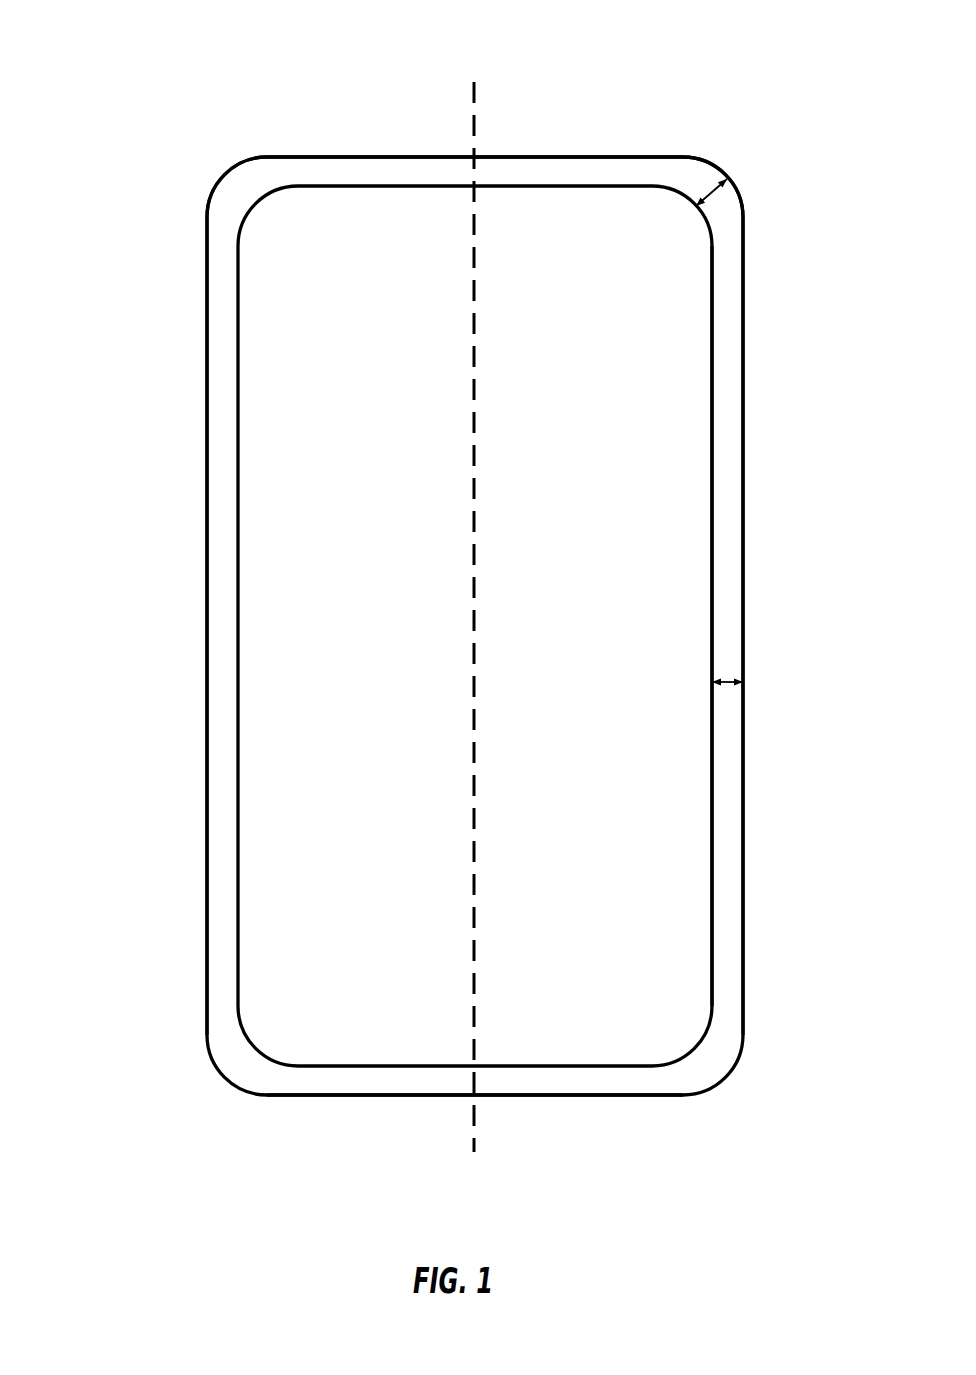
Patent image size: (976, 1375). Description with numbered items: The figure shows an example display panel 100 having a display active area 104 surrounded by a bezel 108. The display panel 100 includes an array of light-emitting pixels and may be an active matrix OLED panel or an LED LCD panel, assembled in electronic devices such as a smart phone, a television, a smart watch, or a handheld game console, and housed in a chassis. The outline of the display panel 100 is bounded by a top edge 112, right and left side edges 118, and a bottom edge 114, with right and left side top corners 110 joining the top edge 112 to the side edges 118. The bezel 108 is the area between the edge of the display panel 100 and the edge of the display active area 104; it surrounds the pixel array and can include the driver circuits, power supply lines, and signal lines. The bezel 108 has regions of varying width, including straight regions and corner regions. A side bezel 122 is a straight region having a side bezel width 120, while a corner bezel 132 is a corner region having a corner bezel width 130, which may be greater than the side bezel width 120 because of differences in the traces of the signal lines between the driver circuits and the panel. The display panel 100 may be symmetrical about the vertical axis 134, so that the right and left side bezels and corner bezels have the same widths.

The display panel 100 is at (86, 47).
The display active area 104 is at (275, 570).
The bezel 108 is at (218, 345).
The side top corner 110 is at (223, 175).
The top edge 112 is at (311, 157).
The bottom edge 114 is at (575, 1095).
The side edge 118 is at (207, 458).
The side bezel width 120 is at (727, 686).
The side bezel 122 is at (725, 593).
The corner bezel width 130 is at (713, 194).
The corner bezel 132 is at (688, 175).
The vertical axis 134 is at (472, 118).